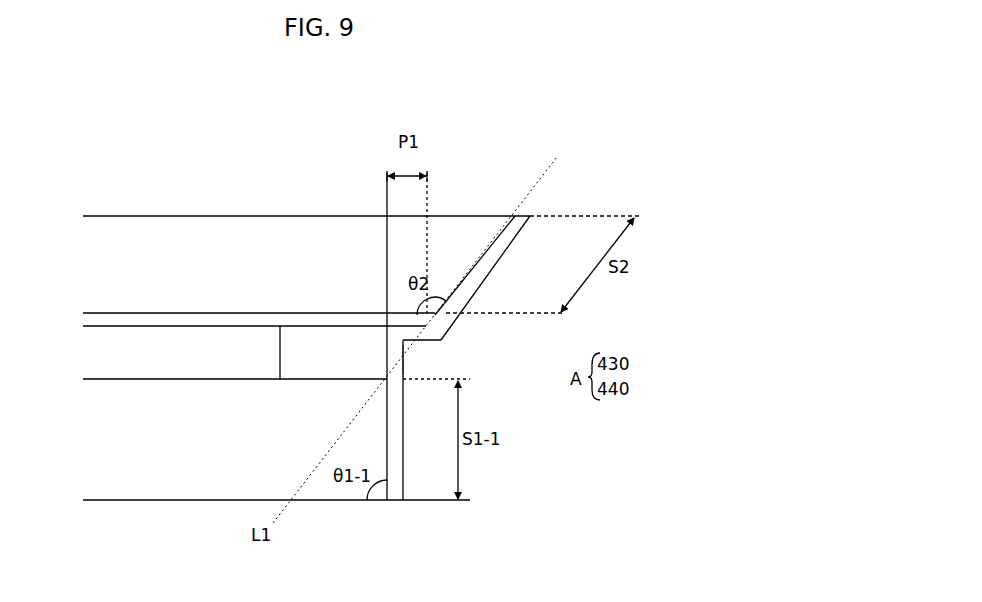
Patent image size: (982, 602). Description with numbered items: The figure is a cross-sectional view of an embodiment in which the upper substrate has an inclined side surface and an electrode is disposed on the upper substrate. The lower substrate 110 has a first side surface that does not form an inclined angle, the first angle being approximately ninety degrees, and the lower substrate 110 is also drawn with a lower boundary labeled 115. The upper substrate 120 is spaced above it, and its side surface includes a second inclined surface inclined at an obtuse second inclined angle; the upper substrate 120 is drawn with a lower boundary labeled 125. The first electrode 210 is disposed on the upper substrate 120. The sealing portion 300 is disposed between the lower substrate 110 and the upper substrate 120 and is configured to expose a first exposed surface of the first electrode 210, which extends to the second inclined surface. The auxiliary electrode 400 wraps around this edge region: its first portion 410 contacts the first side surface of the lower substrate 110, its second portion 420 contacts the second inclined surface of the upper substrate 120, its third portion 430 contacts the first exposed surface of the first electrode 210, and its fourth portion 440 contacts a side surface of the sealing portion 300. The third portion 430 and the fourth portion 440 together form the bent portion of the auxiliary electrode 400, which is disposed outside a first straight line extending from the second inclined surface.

The lower substrate 110 is at (95, 447).
The lower surface of lower substrate 115 is at (337, 501).
The upper substrate 120 is at (95, 262).
The lower surface of upper substrate 125 is at (105, 311).
The first electrode 210 is at (103, 322).
The sealing portion 300 is at (280, 352).
The auxiliary electrode 400 is at (598, 418).
The first portion 410 is at (403, 468).
The second portion 420 is at (500, 258).
The third portion 430 is at (425, 342).
The fourth portion 440 is at (402, 360).